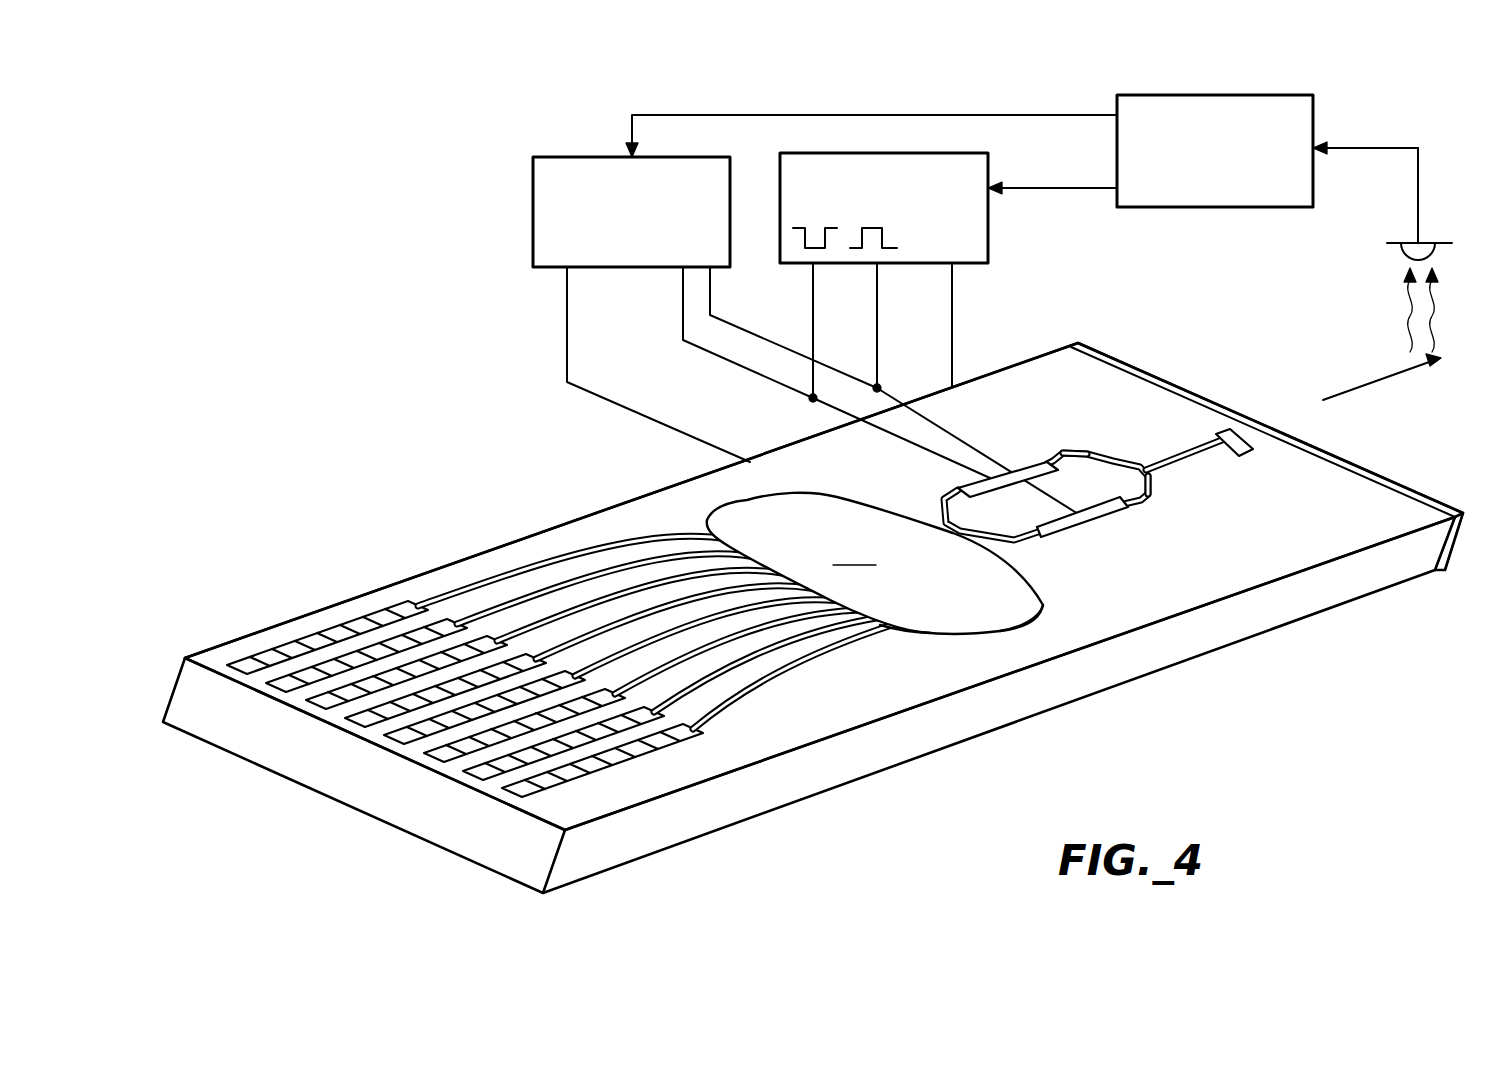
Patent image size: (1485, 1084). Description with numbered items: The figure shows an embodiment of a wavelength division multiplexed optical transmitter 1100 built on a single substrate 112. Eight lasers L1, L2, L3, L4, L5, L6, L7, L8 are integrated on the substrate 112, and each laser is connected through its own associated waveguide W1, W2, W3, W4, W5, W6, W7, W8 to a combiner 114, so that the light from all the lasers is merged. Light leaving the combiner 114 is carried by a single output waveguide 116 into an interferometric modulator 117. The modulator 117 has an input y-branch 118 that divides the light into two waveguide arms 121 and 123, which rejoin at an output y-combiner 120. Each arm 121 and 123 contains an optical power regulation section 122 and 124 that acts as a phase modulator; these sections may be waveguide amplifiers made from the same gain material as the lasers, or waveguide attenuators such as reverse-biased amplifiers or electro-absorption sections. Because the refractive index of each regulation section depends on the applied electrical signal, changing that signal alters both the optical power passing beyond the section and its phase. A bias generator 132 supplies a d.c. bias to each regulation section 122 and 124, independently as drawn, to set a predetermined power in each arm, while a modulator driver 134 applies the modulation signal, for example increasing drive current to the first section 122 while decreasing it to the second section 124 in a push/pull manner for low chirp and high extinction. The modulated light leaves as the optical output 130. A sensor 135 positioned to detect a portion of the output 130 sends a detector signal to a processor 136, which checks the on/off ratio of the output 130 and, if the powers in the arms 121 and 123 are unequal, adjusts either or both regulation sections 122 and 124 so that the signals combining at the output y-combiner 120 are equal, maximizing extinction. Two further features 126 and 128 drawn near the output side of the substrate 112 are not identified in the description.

The WDM optical transmitter 1100 is at (505, 352).
The substrate 112 is at (597, 513).
The combiner 114 is at (982, 618).
The output waveguide 116 is at (947, 523).
The interferometric modulator 117 is at (1403, 482).
The input y-branch 118 is at (1043, 605).
The output y-combiner 120 is at (1140, 467).
The waveguide arm 121 is at (1103, 458).
The optical power regulation section 122 is at (1047, 462).
The waveguide arm 123 is at (1150, 483).
The optical power regulation section 124 is at (1105, 525).
The terminal pad 126 is at (1247, 447).
The rim 128 is at (1360, 468).
The optical output 130 is at (1392, 373).
The bias generator 132 is at (533, 217).
The modulator driver 134 is at (995, 213).
The sensor 135 is at (1398, 243).
The processor 136 is at (1313, 127).
The laser L1 is at (418, 605).
The laser L2 is at (452, 626).
The laser L3 is at (490, 640).
The laser L4 is at (530, 658).
The laser L5 is at (568, 676).
The laser L6 is at (600, 698).
The laser L7 is at (640, 717).
The laser L8 is at (684, 733).
The waveguide W1 is at (493, 577).
The waveguide W2 is at (565, 587).
The waveguide W3 is at (660, 587).
The waveguide W4 is at (693, 597).
The waveguide W5 is at (663, 636).
The waveguide W6 is at (728, 639).
The waveguide W7 is at (791, 645).
The waveguide W8 is at (849, 641).